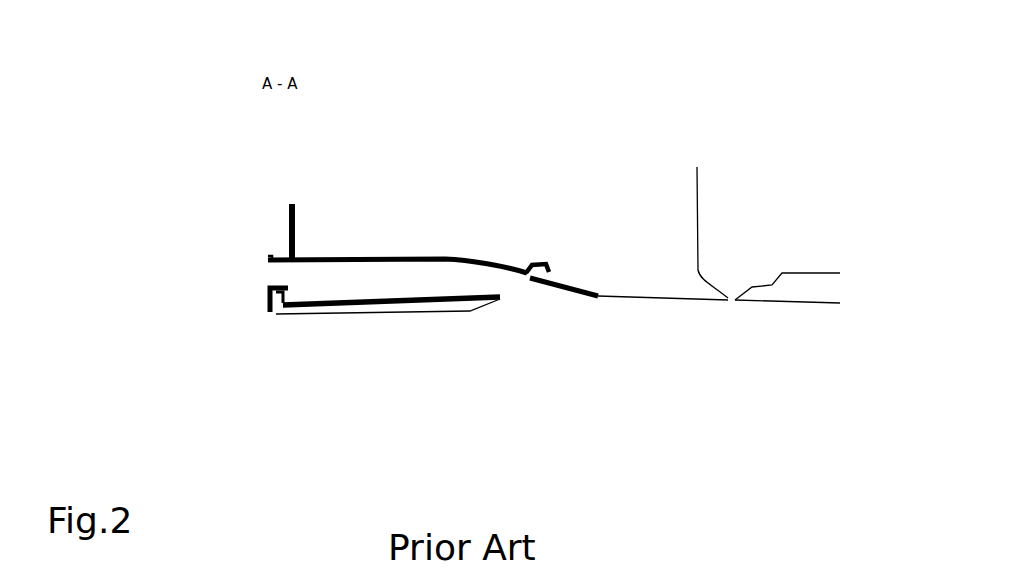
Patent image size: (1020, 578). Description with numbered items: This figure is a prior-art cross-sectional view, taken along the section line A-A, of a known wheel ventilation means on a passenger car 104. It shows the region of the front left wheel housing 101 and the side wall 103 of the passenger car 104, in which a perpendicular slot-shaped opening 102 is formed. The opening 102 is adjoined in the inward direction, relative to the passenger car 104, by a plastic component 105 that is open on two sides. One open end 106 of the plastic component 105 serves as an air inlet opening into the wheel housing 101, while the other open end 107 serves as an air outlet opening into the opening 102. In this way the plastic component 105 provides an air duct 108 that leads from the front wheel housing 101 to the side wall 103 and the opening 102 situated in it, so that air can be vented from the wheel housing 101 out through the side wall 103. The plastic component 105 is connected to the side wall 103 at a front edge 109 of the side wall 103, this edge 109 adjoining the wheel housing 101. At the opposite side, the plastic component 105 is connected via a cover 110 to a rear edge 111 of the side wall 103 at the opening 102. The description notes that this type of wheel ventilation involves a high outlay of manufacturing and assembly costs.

The front left wheel housing 101 is at (198, 304).
The slot-shaped opening 102 is at (554, 300).
The side wall 103 is at (355, 320).
The passenger car 104 is at (552, 166).
The plastic component 105 is at (311, 258).
The open end 106 is at (277, 273).
The other open end 107 is at (492, 281).
The air duct 108 is at (368, 281).
The front edge 109 is at (277, 318).
The cover 110 is at (593, 288).
The rear edge 111 is at (578, 279).